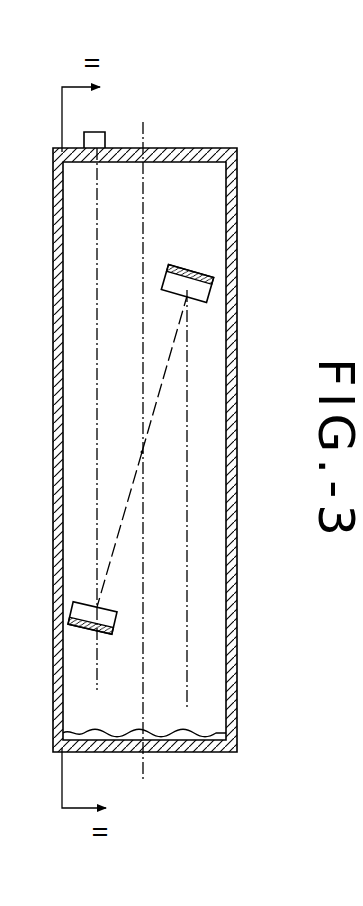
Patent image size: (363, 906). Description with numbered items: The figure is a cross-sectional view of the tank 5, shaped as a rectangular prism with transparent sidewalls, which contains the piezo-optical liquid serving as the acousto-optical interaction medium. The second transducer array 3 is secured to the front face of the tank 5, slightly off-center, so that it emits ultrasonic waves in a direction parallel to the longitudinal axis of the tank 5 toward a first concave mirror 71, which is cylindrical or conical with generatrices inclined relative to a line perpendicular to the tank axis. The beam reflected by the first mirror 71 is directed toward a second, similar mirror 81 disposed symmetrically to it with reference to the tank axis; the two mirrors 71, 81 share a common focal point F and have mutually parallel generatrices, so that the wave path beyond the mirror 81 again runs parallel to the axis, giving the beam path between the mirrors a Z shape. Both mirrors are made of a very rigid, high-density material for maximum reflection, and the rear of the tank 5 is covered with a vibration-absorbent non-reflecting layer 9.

The second transducer array 3 is at (112, 131).
The tank 5 is at (197, 752).
The non-reflecting layer 9 is at (93, 731).
The first concave mirror 71 is at (84, 603).
The second concave mirror 81 is at (196, 303).
The common focal point F is at (144, 452).